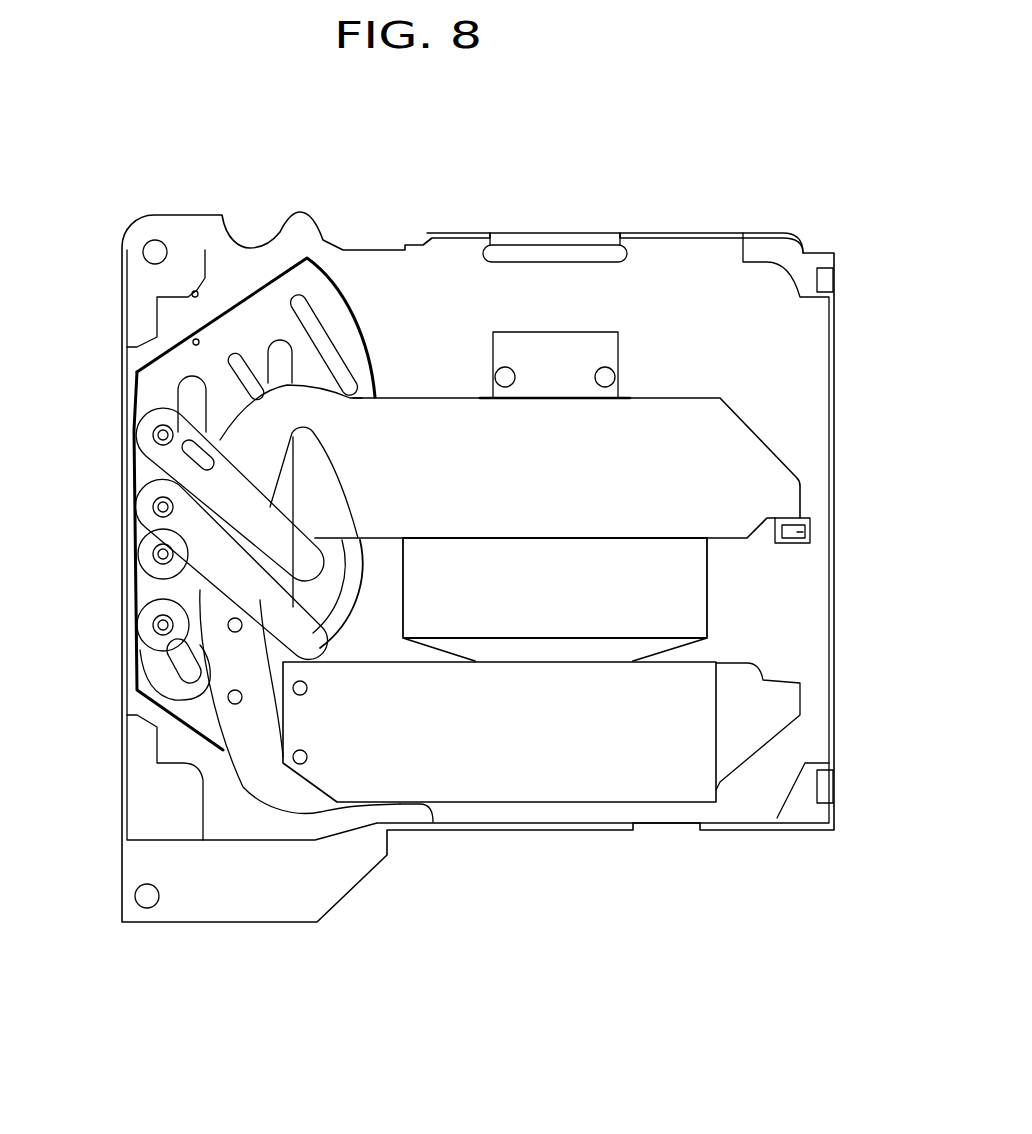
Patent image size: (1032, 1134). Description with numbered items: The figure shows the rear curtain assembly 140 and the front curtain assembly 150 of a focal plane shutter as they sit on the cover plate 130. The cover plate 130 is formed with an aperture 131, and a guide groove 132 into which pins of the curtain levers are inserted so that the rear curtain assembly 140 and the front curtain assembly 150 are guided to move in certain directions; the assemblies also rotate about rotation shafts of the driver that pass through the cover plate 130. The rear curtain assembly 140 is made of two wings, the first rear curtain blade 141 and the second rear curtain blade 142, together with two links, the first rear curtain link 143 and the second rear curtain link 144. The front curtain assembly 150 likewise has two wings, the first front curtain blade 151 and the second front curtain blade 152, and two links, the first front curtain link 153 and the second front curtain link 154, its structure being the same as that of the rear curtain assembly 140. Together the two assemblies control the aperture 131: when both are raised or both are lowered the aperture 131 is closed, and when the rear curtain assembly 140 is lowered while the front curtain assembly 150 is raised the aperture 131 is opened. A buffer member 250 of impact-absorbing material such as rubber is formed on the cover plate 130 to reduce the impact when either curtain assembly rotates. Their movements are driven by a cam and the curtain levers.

The cover plate 130 is at (743, 233).
The aperture 131 is at (667, 578).
The guide groove 132 is at (190, 402).
The rear curtain assembly 140 is at (80, 1027).
The first rear curtain blade 141 is at (383, 770).
The second rear curtain blade 142 is at (268, 782).
The first rear curtain link 143 is at (173, 685).
The second rear curtain link 144 is at (178, 588).
The front curtain assembly 150 is at (447, 150).
The first front curtain blade 151 is at (342, 520).
The second front curtain blade 152 is at (452, 427).
The first front curtain link 153 is at (190, 432).
The second front curtain link 154 is at (190, 518).
The buffer member 250 is at (810, 532).